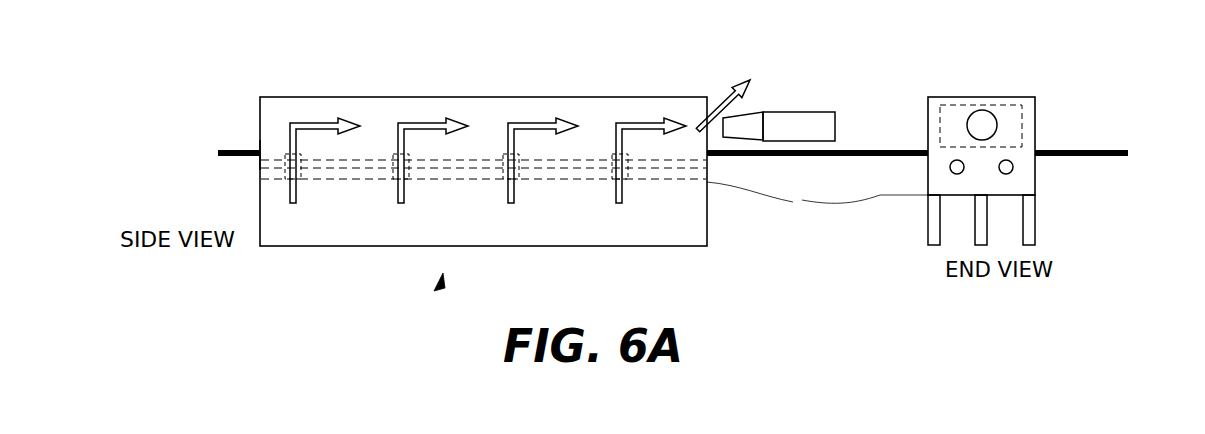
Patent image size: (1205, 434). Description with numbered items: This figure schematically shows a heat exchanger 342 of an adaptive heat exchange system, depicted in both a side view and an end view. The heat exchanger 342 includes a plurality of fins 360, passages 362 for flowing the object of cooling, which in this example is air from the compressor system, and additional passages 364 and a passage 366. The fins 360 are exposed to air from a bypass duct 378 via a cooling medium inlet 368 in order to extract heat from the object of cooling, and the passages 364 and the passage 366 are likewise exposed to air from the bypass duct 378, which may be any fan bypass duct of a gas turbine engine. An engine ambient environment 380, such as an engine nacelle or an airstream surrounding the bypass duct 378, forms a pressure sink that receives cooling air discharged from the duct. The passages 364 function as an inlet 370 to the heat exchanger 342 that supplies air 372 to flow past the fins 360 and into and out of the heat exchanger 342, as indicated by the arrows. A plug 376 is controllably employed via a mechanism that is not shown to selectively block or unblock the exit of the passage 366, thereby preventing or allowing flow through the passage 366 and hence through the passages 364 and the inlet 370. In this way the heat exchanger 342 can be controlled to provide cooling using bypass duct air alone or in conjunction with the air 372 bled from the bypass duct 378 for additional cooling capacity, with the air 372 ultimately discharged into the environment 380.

The heat exchanger 342 is at (582, 97).
The fins 360 is at (707, 220).
The passages 362 is at (472, 160).
The passages 364 is at (302, 176).
The passage 366 is at (997, 120).
The cooling medium inlet 368 is at (260, 208).
The inlet 370 is at (441, 292).
The air 372 is at (419, 123).
The plug 376 is at (836, 125).
The bypass duct 378 is at (1097, 174).
The engine ambient environment 380 is at (1076, 120).